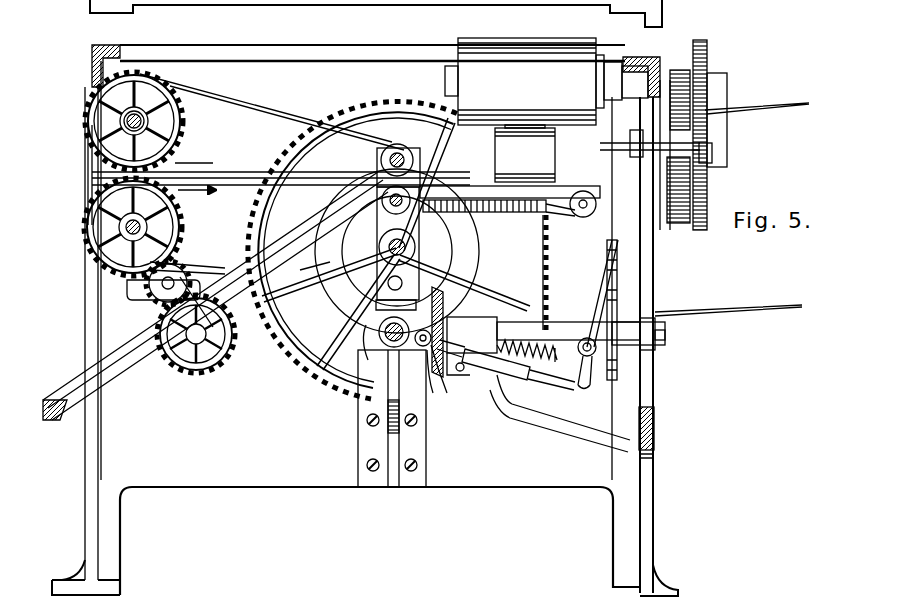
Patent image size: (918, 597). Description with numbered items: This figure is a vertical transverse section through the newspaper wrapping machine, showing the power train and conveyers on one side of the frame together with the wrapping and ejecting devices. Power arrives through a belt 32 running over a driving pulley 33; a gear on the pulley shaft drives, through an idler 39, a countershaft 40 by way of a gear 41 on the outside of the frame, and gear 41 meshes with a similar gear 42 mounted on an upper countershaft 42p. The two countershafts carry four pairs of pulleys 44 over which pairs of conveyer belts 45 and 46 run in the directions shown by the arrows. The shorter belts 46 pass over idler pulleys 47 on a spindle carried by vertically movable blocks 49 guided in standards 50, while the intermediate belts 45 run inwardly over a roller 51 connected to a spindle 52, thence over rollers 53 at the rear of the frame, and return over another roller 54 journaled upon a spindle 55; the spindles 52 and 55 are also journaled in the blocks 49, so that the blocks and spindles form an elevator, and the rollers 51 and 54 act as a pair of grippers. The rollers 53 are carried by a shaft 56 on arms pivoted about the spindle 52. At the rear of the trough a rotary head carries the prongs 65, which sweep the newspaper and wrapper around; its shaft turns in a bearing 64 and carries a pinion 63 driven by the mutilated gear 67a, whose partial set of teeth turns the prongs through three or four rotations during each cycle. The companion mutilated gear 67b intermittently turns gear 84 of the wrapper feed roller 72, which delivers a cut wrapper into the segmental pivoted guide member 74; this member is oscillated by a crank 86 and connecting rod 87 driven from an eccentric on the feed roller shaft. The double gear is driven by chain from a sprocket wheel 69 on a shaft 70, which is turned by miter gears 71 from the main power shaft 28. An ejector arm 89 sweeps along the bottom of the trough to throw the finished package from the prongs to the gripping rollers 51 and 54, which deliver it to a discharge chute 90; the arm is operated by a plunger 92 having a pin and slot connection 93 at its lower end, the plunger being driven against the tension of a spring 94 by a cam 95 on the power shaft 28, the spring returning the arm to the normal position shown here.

The gear 42 is at (92, 125).
The countershaft 42p is at (150, 133).
The gear 41 is at (88, 212).
The pulleys 44 is at (92, 172).
The conveyer belts 46 is at (365, 120).
The countershaft 40 is at (140, 252).
The idler 39 is at (199, 265).
The discharge chute 90 is at (232, 343).
The conveyer belts 45 is at (275, 172).
The roller 54 is at (311, 274).
The roller 51 is at (385, 167).
The idler pulleys 47 is at (398, 150).
The spindle 52 is at (438, 178).
The blocks 49 is at (415, 282).
The main power shaft 28 is at (390, 349).
The spindle 55 is at (378, 330).
The cam 95 is at (372, 330).
The miter gears 71 is at (372, 336).
The standards 50 is at (360, 415).
The driving pulley 33 is at (448, 300).
The feed roller 72 is at (522, 62).
The segmental pivoted member 74 is at (520, 160).
The prongs 65 is at (520, 183).
The rollers 53 is at (583, 217).
The shaft 56 is at (560, 272).
The ejector arm 89 is at (606, 305).
The bearing 64 is at (622, 245).
The sprocket wheel 69 is at (626, 350).
The shaft 70 is at (517, 330).
The spring 94 is at (520, 372).
The plunger 92 is at (545, 390).
The pin and slot connection 93 is at (582, 405).
The mutilated gear 67a is at (680, 70).
The gear 84 is at (707, 47).
The mutilated gear 67b is at (707, 205).
The connecting rod 87 is at (727, 133).
The crank 86 is at (712, 160).
The belt 32 is at (755, 110).
The pinion 63 is at (665, 240).